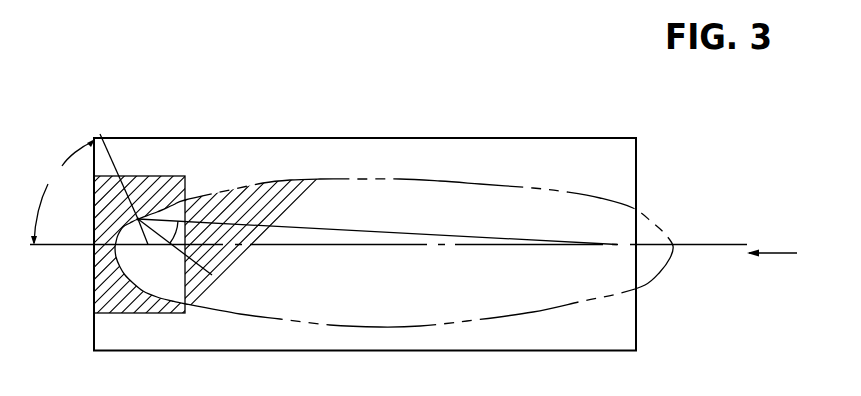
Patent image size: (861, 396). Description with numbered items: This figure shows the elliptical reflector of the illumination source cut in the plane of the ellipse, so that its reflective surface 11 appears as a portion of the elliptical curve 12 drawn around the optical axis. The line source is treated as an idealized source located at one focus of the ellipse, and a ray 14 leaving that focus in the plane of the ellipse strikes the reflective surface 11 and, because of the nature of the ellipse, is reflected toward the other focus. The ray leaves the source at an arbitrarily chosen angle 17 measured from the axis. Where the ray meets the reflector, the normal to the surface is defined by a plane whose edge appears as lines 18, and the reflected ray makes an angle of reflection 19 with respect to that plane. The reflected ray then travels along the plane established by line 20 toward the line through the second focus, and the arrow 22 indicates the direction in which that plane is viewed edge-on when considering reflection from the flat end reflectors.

The reflective surface 11 is at (173, 296).
The elliptical curve 12 is at (413, 180).
The ray 14 is at (128, 232).
The angle 17 is at (84, 189).
The lines defining the normal plane 18 is at (203, 270).
The angle of reflection 19 is at (177, 227).
The line establishing the reflection plane 20 is at (410, 232).
The arrow 22 is at (768, 253).